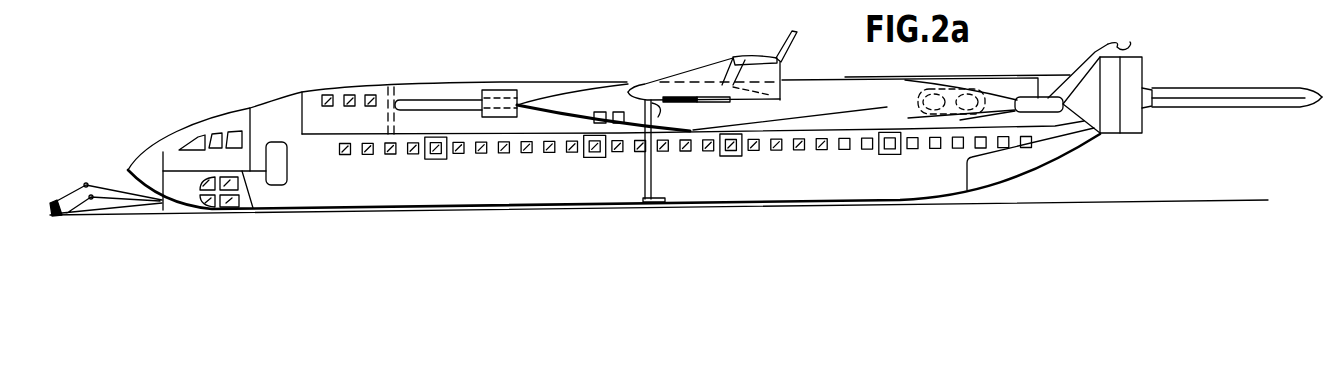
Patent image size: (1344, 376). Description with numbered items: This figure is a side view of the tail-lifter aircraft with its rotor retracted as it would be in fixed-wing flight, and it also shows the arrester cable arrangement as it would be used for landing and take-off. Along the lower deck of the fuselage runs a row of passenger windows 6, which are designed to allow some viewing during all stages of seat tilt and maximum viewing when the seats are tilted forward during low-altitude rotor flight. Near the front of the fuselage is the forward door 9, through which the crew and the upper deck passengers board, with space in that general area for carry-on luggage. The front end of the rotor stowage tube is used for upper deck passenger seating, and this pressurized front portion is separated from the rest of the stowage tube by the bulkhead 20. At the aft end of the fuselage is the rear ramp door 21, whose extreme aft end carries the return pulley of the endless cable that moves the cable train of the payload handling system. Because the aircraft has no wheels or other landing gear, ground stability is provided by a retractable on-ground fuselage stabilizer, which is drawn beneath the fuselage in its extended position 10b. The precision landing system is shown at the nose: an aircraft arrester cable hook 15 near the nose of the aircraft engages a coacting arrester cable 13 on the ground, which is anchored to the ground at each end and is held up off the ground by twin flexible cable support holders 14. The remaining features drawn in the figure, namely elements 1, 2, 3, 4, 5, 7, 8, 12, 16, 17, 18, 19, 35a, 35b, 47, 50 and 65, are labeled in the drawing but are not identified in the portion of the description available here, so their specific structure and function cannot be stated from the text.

The aircraft fuselage 1 is at (887, 80).
The wing 2 is at (681, 75).
The tail fin 3 is at (1094, 67).
The vertical stabilizer 4 is at (731, 66).
The tail block 5 is at (1145, 67).
The passenger windows 6 is at (845, 150).
The upper deck windows 7 is at (348, 94).
The emergency exit frames 8 is at (592, 158).
The forward door 9 is at (288, 172).
The extended position of retractable on-ground fuselage stabilizer 10b is at (655, 181).
The lower deck windows 12 is at (218, 207).
The arrester cable 13 is at (88, 184).
The flexible cable support holders 14 is at (85, 185).
The aircraft arrester cable hook 15 is at (168, 208).
The housing 16 is at (482, 89).
The sensors 17 is at (613, 112).
The engine nacelle 18 is at (1064, 72).
The rod 19 is at (437, 76).
The bulkhead 20 is at (391, 87).
The rear ramp door 21 is at (1053, 158).
The probe shaft upper half 35a is at (1215, 86).
The probe shaft lower half 35b is at (1236, 109).
The hook 47 is at (1133, 41).
The engine outline 50 is at (945, 67).
The engine 65 is at (1013, 78).